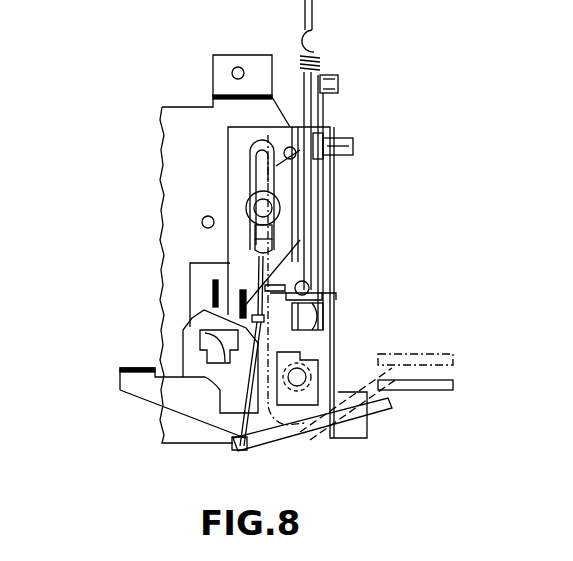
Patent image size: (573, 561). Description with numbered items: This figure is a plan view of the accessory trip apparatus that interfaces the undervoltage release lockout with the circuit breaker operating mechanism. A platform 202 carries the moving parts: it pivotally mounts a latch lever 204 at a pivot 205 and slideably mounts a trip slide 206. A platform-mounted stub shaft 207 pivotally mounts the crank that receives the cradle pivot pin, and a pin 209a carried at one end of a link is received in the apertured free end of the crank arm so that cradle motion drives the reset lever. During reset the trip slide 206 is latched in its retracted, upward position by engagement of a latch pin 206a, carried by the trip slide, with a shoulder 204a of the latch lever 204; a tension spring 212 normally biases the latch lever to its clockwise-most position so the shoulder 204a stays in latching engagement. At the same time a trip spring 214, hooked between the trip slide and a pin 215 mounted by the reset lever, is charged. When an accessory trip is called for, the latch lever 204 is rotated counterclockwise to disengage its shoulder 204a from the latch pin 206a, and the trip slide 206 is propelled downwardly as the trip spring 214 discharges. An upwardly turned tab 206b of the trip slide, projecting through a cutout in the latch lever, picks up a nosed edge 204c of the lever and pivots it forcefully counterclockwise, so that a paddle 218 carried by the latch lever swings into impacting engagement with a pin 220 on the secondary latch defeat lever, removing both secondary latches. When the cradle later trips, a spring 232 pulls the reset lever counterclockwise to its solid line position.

The platform 202 is at (191, 113).
The latch lever 204 is at (150, 391).
The shoulder 204a is at (328, 280).
The nosed edge 204c is at (230, 400).
The pivot 205 is at (300, 383).
The trip slide 206 is at (235, 162).
The latch pin 206a is at (308, 280).
The upwardly turned tab 206b is at (185, 336).
The stub shaft 207 is at (340, 85).
The pin 209a is at (355, 148).
The tension spring 212 is at (252, 259).
The trip spring 214 is at (290, 247).
The pin 215 is at (326, 330).
The paddle 218 is at (380, 412).
The pin 220 is at (440, 392).
The spring 232 is at (324, 58).